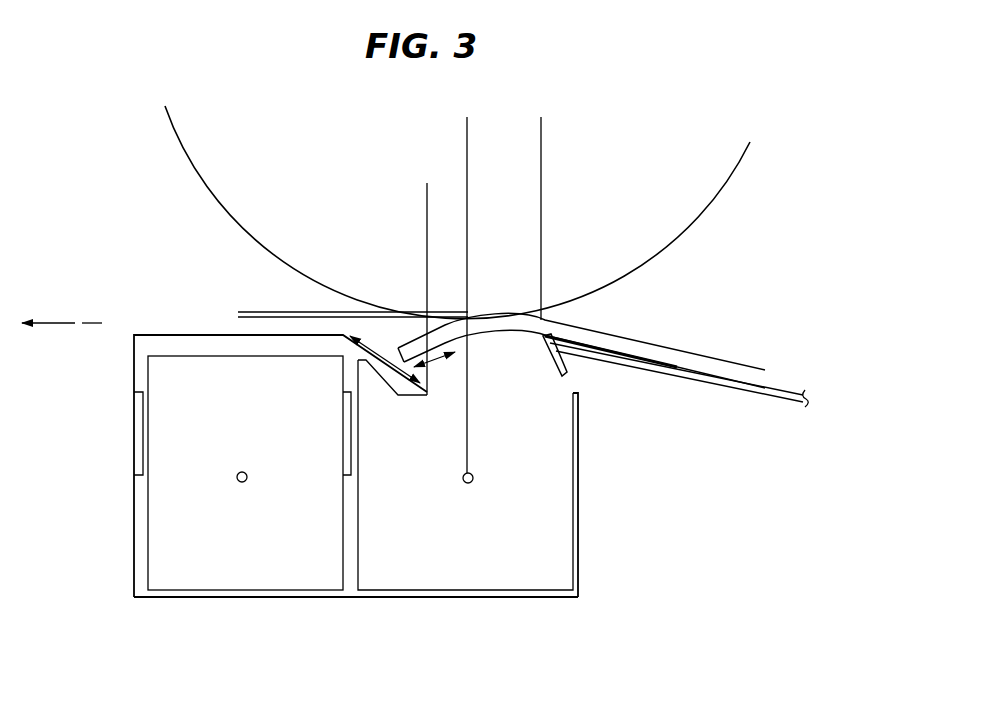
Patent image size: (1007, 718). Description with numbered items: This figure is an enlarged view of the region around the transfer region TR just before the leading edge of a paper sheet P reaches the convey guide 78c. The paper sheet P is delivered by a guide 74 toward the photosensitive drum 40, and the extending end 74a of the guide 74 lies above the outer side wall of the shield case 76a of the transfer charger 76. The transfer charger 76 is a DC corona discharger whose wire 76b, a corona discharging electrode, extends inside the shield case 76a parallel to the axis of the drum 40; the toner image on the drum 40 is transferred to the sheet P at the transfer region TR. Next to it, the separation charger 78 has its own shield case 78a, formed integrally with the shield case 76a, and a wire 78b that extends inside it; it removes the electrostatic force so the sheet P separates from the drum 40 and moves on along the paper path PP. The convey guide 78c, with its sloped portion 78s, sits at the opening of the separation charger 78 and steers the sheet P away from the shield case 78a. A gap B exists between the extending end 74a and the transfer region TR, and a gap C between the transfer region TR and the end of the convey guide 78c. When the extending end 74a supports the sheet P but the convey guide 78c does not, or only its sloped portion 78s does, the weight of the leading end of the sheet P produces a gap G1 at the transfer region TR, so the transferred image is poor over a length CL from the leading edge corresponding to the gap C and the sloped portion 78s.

The photosensitive drum 40 is at (712, 180).
The guide 74 is at (692, 385).
The extending end 74a is at (543, 357).
The transfer charger 76 is at (462, 598).
The shield case 76a is at (580, 517).
The wire 76b is at (473, 480).
The separation charger 78 is at (252, 598).
The shield case 78a is at (134, 527).
The wire 78b is at (248, 480).
The convey guide 78c is at (138, 355).
The sloped portion 78s is at (360, 357).
The paper sheet P is at (570, 320).
The paper path PP is at (52, 317).
The transfer region TR is at (468, 316).
The length CL is at (433, 365).
The gap B is at (583, 136).
The gap C is at (512, 230).
The gap G1 is at (268, 336).